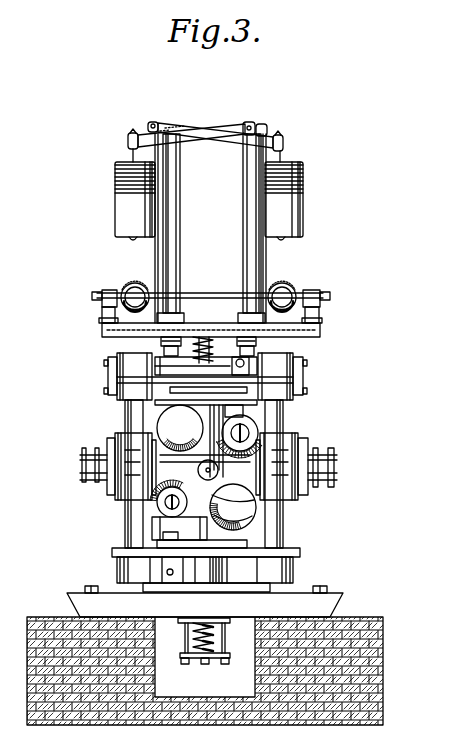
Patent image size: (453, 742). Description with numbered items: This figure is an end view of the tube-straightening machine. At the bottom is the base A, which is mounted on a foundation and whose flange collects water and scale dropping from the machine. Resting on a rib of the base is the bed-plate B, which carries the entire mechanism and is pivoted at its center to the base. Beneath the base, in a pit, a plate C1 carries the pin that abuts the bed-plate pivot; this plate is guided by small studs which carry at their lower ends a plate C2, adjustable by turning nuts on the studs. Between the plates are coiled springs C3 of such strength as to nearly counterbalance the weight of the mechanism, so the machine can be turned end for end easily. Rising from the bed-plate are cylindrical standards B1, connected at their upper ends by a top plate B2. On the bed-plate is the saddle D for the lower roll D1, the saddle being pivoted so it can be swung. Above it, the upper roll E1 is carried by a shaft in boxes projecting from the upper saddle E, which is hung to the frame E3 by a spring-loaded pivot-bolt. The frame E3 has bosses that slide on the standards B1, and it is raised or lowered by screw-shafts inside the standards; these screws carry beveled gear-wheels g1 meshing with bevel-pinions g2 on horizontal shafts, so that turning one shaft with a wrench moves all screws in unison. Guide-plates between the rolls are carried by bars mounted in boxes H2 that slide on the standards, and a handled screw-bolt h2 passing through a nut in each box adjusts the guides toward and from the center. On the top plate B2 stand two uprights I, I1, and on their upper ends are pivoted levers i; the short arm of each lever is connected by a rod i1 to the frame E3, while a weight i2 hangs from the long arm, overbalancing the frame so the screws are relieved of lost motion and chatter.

The lever i is at (228, 127).
The weight i2 is at (209, 194).
The upright I1 is at (180, 258).
The upright I is at (243, 258).
The rod i1 is at (154, 267).
The bevel-pinion g2 is at (286, 290).
The beveled gear-wheel g1 is at (319, 313).
The top plate B2 is at (196, 327).
The frame E3 is at (293, 371).
The upper saddle E is at (252, 413).
The upper roll E1 is at (209, 442).
The box H2 is at (125, 440).
The handled screw-bolt h2 is at (85, 482).
The lower roll D1 is at (233, 507).
The saddle D is at (198, 514).
The standard B1 is at (210, 474).
The bed-plate B is at (213, 570).
The base A is at (205, 601).
The plate C1 is at (231, 622).
The coiled spring C3 is at (195, 642).
The plate C2 is at (198, 664).